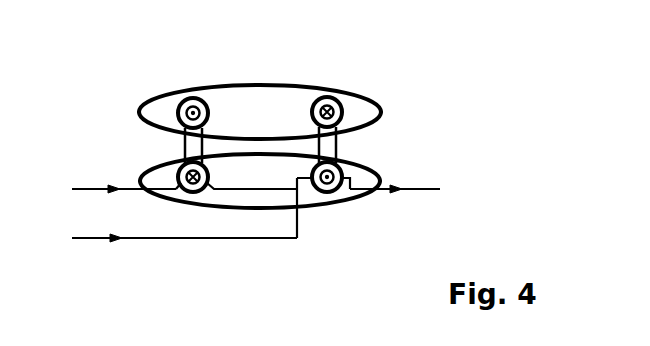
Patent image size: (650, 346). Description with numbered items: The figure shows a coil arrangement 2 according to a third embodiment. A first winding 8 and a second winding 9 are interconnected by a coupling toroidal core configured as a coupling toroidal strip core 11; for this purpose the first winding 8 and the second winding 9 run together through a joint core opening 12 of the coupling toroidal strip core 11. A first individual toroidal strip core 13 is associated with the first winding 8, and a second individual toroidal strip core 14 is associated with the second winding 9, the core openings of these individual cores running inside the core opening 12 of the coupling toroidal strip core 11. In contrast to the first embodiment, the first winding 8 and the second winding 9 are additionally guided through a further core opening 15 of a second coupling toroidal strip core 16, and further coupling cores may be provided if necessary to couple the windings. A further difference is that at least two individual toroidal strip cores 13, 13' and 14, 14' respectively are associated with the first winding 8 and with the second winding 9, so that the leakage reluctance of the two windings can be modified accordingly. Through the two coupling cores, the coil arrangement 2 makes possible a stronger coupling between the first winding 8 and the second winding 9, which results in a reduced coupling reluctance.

The coil arrangement 2 is at (157, 258).
The first winding 8 is at (216, 100).
The second winding 9 is at (344, 94).
The coupling toroidal strip core 11 is at (284, 86).
The core opening 12 is at (276, 123).
The first individual toroidal strip core 13 is at (157, 101).
The first individual toroidal strip core 13' is at (186, 156).
The second individual toroidal strip core 14 is at (378, 113).
The second individual toroidal strip core 14' is at (389, 160).
The further core opening 15 is at (274, 180).
The second coupling toroidal strip core 16 is at (322, 206).